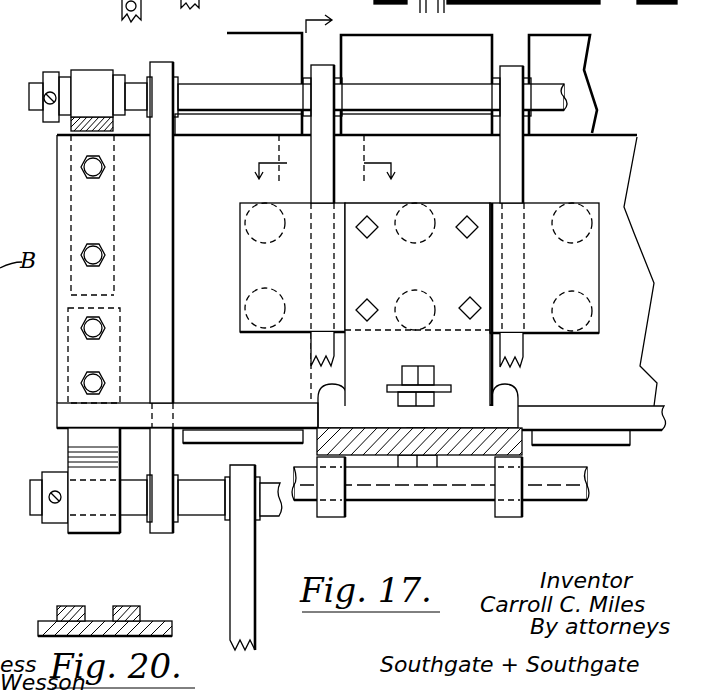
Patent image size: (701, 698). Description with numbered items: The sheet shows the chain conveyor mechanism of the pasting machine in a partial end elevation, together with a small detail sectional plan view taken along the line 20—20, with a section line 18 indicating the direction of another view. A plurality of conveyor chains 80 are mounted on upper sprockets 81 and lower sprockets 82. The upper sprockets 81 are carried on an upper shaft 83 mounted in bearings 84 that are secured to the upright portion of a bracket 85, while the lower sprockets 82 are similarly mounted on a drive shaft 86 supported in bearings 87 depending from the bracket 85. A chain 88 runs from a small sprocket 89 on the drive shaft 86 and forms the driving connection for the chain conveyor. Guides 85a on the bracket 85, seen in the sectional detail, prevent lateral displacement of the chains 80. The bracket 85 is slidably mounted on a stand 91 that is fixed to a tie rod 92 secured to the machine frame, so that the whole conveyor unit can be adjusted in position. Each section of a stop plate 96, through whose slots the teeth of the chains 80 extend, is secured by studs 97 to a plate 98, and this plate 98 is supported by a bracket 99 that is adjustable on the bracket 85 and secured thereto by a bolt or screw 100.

In FIG. 17, the section line 18 is at (406, 241).
In FIG. 17, the section line 20— 20 is at (332, 159).
In FIG. 17, the conveyor chains 80 is at (163, 195).
In FIG. 17, the upper sprockets 81 is at (227, 34).
In FIG. 17, the lower sprockets 82 is at (178, 518).
In FIG. 17, the upper shaft 83 is at (417, 92).
In FIG. 17, the bearings 84 is at (97, 75).
In FIG. 17, the bracket 85 is at (59, 163).
In FIG. 20, the bracket 85 is at (50, 621).
In FIG. 17, the guides 85a is at (382, 136).
In FIG. 20, the guides 85a is at (126, 606).
In FIG. 17, the drive shaft 86 is at (187, 488).
In FIG. 17, the bearings 87 is at (80, 442).
In FIG. 17, the chain 88 is at (233, 562).
In FIG. 17, the small sprocket 89 is at (258, 520).
In FIG. 17, the stand 91 is at (500, 444).
In FIG. 17, the tie rod 92 is at (464, 500).
In FIG. 17, the stop plate 96 is at (280, 36).
In FIG. 17, the studs 97 is at (272, 243).
In FIG. 17, the plate 98 is at (241, 278).
In FIG. 17, the bracket 99 is at (458, 207).
In FIG. 17, the bolt or screw 100 is at (431, 369).